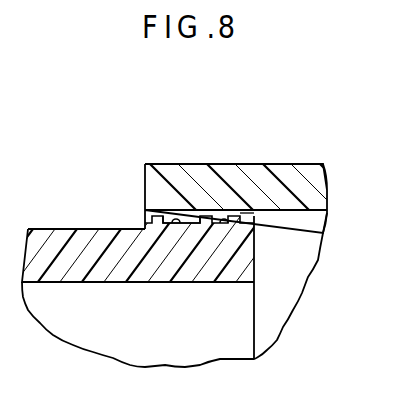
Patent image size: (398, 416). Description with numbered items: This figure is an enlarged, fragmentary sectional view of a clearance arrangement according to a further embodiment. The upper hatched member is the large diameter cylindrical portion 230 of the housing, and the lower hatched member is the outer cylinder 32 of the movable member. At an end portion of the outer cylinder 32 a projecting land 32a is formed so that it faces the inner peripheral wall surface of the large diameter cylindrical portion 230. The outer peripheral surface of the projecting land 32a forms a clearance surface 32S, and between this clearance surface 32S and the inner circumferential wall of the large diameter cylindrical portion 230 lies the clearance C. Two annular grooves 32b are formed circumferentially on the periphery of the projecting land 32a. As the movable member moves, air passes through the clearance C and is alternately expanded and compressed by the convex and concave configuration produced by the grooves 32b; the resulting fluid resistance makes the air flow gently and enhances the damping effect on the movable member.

The large diameter cylindrical portion 230 is at (270, 177).
The outer cylinder 32 is at (92, 263).
The clearance surface 32S is at (193, 222).
The projecting land 32a is at (190, 217).
The annular grooves 32b is at (175, 220).
The clearance C is at (240, 213).